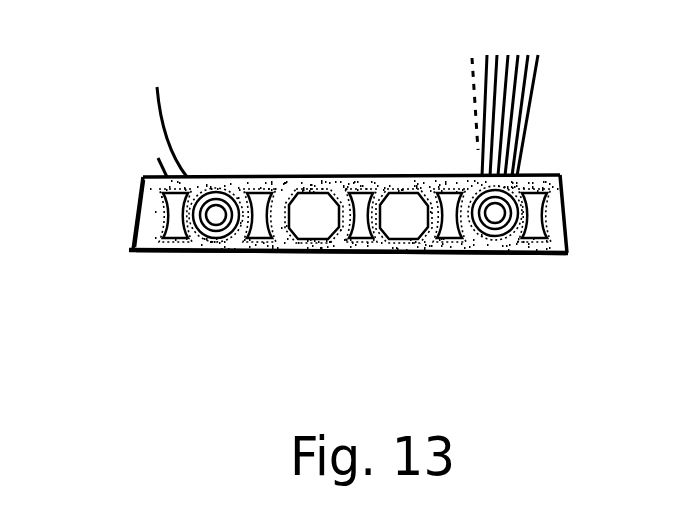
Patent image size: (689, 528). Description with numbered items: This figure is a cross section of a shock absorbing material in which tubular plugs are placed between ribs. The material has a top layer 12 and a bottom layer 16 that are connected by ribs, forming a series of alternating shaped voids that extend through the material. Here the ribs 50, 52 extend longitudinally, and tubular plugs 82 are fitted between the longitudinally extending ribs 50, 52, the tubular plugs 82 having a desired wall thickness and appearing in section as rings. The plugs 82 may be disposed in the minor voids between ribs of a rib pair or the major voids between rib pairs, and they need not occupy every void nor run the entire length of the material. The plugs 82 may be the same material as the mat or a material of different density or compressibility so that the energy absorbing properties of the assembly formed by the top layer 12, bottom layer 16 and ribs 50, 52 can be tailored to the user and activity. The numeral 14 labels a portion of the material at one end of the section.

The top layer 12 is at (535, 175).
The first end 14 is at (148, 222).
The bottom layer 16 is at (535, 255).
The plug 82 is at (165, 256).
The longitudinally extending rib 50 is at (206, 258).
The rib 52 is at (234, 255).